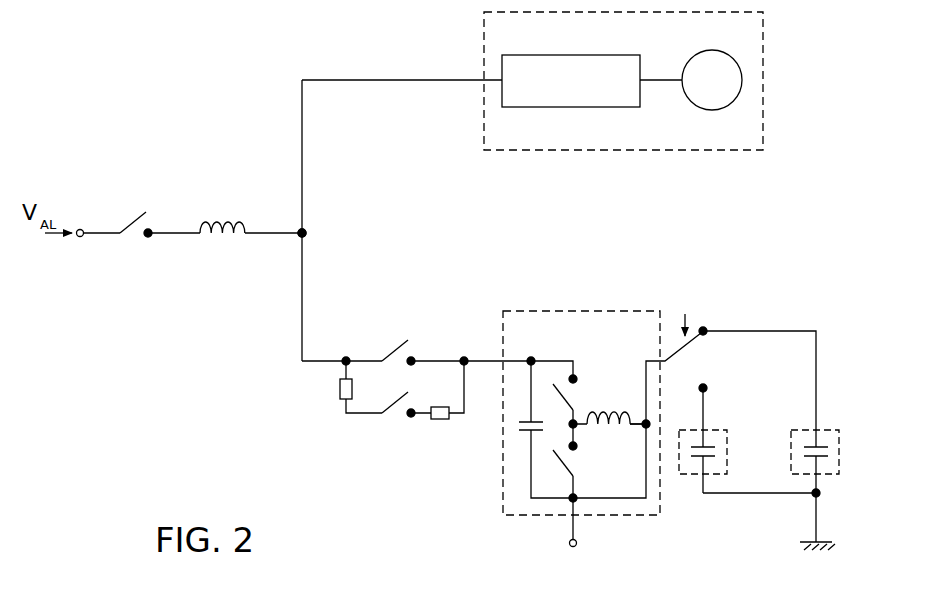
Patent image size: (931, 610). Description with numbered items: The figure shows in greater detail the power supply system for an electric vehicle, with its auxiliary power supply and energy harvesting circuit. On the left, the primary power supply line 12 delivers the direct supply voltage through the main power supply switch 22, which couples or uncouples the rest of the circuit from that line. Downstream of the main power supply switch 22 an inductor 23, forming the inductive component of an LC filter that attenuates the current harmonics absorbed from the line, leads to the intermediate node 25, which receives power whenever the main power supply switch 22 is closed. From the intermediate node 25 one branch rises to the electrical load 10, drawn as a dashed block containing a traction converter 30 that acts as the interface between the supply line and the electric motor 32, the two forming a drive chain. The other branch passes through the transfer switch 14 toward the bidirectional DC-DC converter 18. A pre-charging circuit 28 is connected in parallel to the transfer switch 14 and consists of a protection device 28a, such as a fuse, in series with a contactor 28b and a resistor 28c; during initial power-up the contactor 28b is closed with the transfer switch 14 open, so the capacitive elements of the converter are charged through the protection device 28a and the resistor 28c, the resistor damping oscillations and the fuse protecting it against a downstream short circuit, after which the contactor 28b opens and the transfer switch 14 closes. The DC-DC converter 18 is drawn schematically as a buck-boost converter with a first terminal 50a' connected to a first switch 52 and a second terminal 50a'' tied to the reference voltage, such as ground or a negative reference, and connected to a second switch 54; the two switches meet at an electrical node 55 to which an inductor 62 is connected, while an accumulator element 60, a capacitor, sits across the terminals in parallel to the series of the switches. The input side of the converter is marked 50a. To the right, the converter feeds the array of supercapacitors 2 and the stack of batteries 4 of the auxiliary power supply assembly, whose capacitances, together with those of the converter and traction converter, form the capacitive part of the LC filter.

The array of supercapacitors 2 is at (830, 430).
The stack of batteries 4 is at (684, 478).
The electrical load 10 is at (503, 152).
The primary power supply line 12 is at (80, 229).
The transfer switch 14 is at (393, 355).
The bidirectional DC-DC converter 18 is at (634, 311).
The main power supply switch 22 is at (131, 222).
The inductor 23 is at (226, 216).
The intermediate node 25 is at (306, 231).
The pre-charging circuit 28 is at (359, 418).
The protection device 28a is at (338, 388).
The contactor 28b is at (398, 420).
The resistor 28c is at (440, 421).
The traction converter 30 is at (618, 107).
The electric motor 32 is at (686, 62).
The first terminal 50a is at (485, 347).
The first terminal 50a' is at (577, 317).
The second terminal 50a'' is at (533, 536).
The first switch 52 is at (578, 396).
The second switch 54 is at (566, 466).
The electrical node 55 is at (604, 413).
The accumulator element 60 is at (517, 428).
The inductor 62 is at (608, 433).